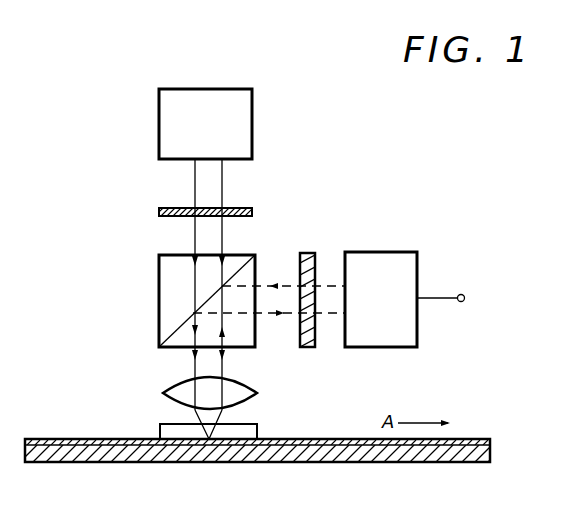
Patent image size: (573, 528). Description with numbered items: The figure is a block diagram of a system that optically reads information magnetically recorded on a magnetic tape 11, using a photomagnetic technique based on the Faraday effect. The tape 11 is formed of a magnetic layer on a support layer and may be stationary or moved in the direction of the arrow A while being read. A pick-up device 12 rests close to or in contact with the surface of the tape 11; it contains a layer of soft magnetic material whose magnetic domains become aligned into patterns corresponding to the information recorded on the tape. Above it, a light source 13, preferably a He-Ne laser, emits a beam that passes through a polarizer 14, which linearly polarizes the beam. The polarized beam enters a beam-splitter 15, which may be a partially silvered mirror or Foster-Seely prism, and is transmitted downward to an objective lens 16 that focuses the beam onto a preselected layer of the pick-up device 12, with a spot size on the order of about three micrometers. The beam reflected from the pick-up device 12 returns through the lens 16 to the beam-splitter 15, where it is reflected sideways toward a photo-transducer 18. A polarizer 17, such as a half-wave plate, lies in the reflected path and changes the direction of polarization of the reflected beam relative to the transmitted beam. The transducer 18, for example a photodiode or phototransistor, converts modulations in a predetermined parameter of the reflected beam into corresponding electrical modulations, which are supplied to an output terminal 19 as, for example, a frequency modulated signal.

The magnetic tape 11 is at (333, 462).
The pick-up device 12 is at (258, 424).
The light source 13 is at (252, 92).
The polarizer 14 is at (253, 208).
The beam-splitter 15 is at (161, 308).
The objective lens 16 is at (177, 390).
The polarizer 17 is at (303, 253).
The photo-transducer 18 is at (411, 253).
The output terminal 19 is at (467, 282).